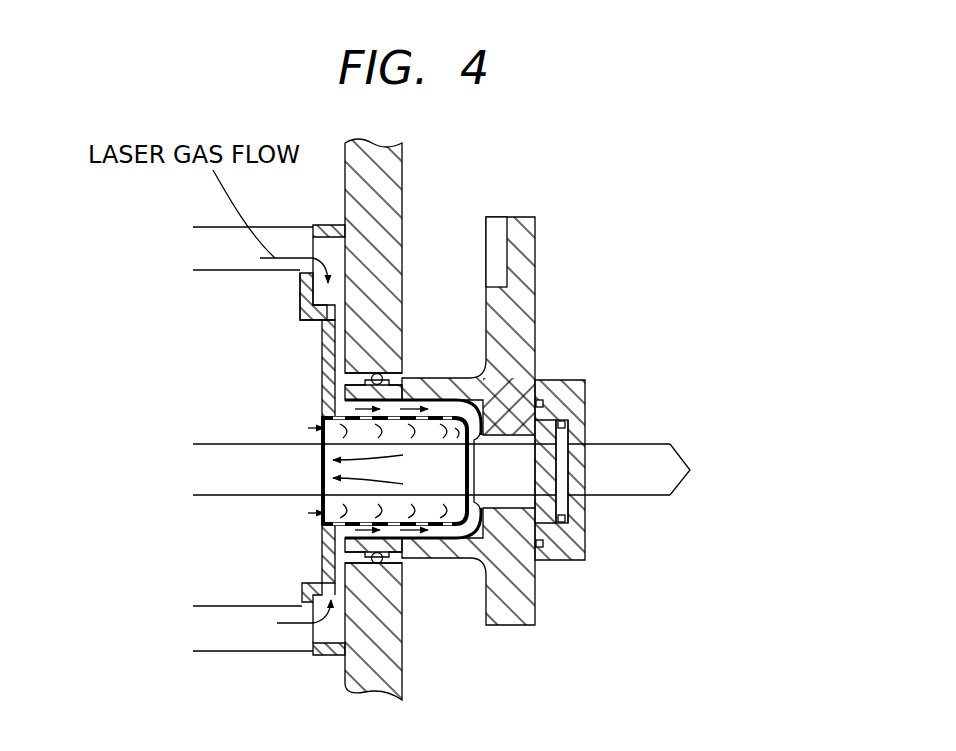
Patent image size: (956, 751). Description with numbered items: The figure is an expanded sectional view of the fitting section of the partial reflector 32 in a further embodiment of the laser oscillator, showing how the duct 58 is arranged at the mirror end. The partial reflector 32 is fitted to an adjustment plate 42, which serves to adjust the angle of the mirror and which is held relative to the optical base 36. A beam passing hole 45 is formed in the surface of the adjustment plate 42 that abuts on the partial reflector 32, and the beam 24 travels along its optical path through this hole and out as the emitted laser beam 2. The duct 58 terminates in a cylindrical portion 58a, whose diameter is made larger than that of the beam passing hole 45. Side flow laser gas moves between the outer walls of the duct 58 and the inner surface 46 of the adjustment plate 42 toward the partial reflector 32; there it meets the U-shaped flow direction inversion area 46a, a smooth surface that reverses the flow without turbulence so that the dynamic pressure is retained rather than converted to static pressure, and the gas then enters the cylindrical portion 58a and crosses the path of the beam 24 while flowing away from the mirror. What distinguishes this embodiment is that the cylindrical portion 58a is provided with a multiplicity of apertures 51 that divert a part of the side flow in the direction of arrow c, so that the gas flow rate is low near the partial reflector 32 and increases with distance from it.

The laser beam 2 is at (660, 498).
The beam 24 is at (220, 444).
The partial reflector 32 is at (560, 468).
The optical base 36 is at (403, 178).
The adjustment plate 42 is at (523, 217).
The beam passing hole 45 is at (575, 495).
The inner surface 46 is at (425, 535).
The flow direction inversion area 46a is at (481, 412).
The apertures 51 is at (445, 530).
The duct 58 is at (213, 270).
The cylindrical portion 58a is at (430, 398).